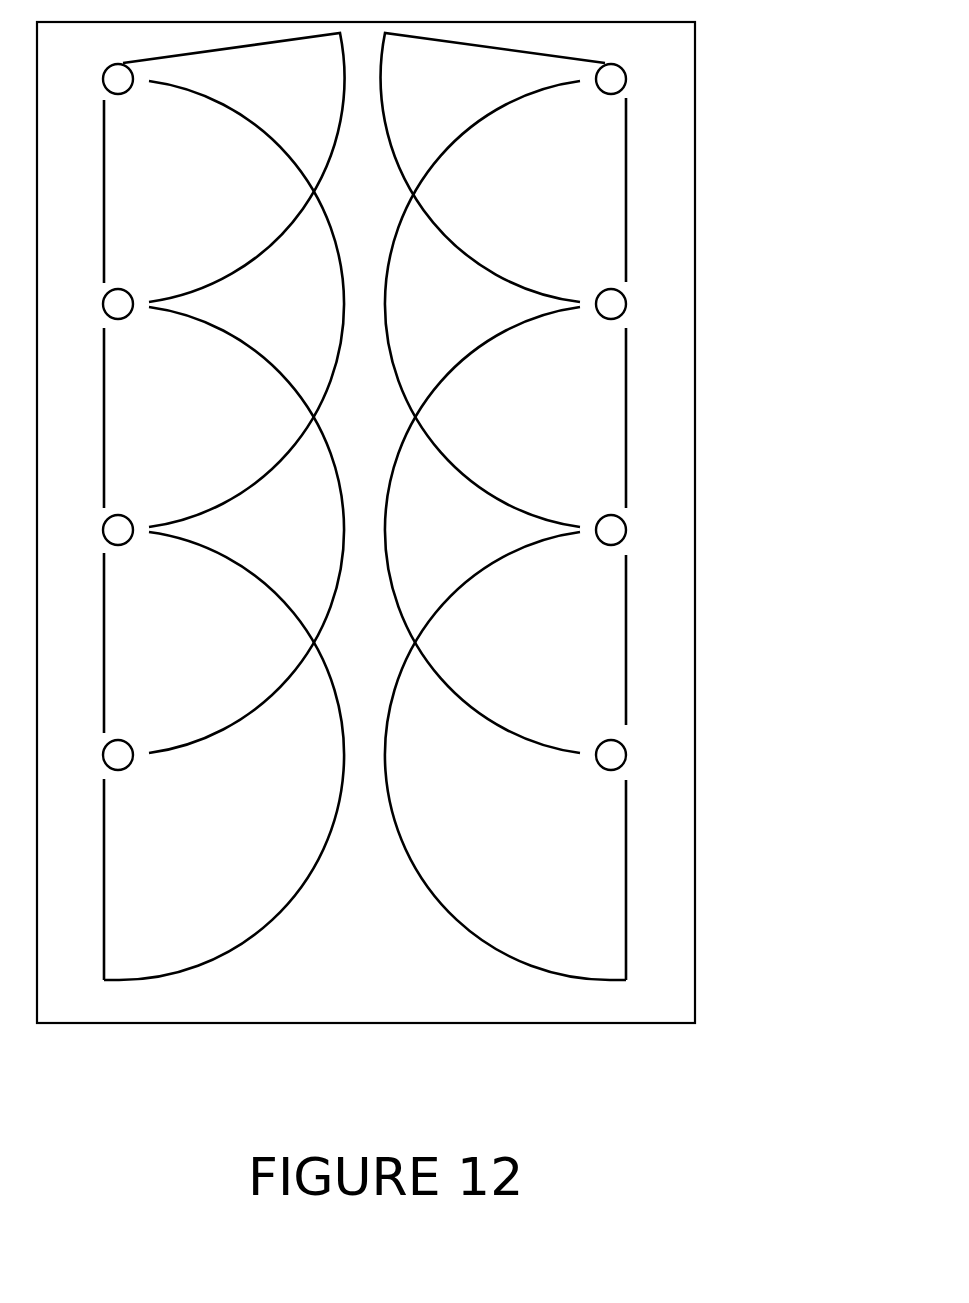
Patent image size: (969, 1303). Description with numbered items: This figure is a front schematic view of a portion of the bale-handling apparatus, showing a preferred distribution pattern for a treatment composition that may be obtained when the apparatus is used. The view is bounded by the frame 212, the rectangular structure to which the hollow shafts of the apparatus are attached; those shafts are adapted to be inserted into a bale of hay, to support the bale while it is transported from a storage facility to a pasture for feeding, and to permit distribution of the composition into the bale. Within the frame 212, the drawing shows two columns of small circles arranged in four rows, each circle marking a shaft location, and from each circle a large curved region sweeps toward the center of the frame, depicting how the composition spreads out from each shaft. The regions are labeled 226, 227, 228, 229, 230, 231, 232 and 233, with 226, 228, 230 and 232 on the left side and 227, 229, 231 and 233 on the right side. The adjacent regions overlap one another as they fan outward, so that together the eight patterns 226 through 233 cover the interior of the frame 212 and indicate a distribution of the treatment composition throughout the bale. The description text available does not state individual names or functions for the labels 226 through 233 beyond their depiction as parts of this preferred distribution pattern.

The frame 212 is at (695, 372).
The feed slot / blade segment 226 is at (340, 92).
The feed slot / blade segment 227 is at (385, 95).
The feed slot / blade segment 228 is at (343, 317).
The feed slot / blade segment 229 is at (385, 307).
The feed slot / blade segment 230 is at (343, 547).
The feed slot / blade segment 231 is at (387, 547).
The feed slot / blade segment 232 is at (347, 760).
The feed slot / blade segment 233 is at (388, 758).